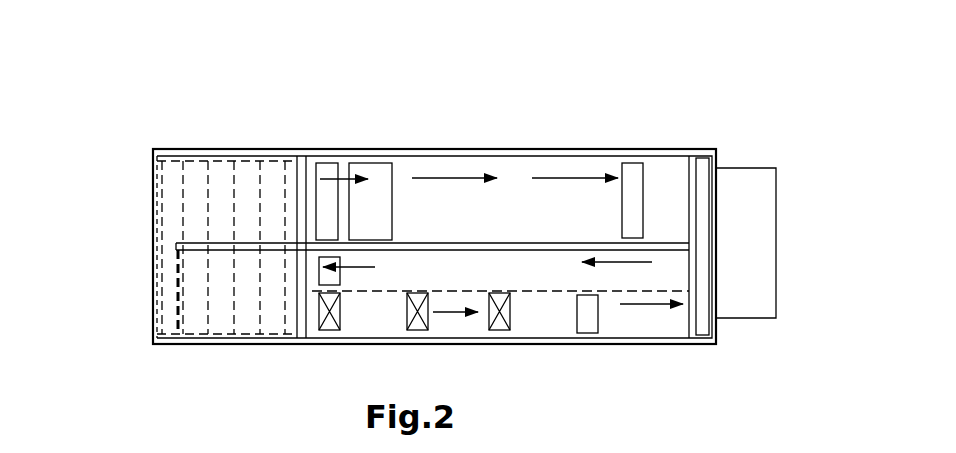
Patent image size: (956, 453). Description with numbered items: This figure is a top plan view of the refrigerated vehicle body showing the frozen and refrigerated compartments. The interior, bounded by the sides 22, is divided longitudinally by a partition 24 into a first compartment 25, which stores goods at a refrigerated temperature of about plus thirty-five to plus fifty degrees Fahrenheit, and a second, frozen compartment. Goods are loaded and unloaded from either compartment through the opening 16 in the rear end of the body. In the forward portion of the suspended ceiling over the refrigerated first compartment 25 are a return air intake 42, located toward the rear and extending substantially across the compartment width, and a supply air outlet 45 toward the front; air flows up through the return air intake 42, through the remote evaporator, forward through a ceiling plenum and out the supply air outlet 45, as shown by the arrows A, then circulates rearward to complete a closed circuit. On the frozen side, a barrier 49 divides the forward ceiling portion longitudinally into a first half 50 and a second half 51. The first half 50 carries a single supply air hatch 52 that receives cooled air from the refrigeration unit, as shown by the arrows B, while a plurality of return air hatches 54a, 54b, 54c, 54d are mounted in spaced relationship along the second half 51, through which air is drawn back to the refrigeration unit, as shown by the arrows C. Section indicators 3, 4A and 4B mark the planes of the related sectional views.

The opening 16 is at (138, 326).
The sides 22 is at (225, 148).
The partition 24 is at (530, 240).
The first compartment 25 is at (508, 177).
The return air intake 42 is at (323, 168).
The supply air outlet 45 is at (632, 170).
The barrier 49 is at (550, 290).
The first half 50 is at (550, 276).
The second half 51 is at (522, 316).
The supply air hatch 52 is at (337, 278).
The return air hatch 54a is at (588, 318).
The return air hatch 54b is at (497, 330).
The return air hatch 54c is at (418, 330).
The return air hatch 54d is at (333, 330).
The section line 3 is at (152, 207).
The section line 4A is at (135, 265).
The section line 4B is at (113, 310).